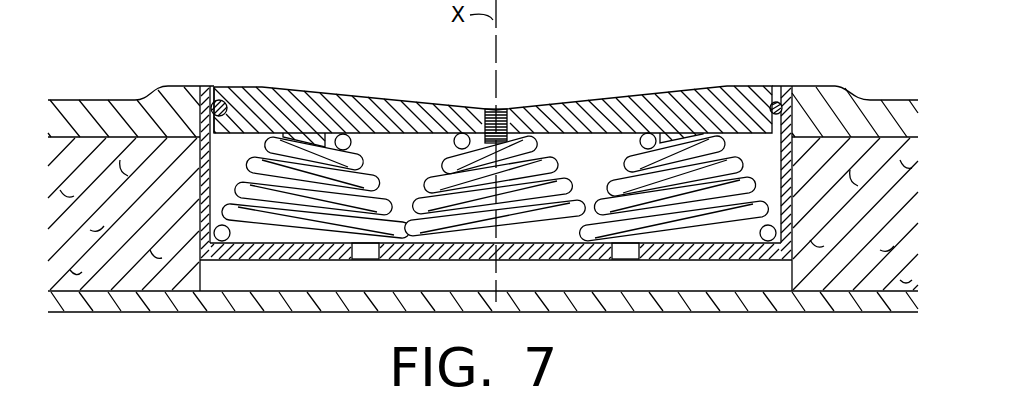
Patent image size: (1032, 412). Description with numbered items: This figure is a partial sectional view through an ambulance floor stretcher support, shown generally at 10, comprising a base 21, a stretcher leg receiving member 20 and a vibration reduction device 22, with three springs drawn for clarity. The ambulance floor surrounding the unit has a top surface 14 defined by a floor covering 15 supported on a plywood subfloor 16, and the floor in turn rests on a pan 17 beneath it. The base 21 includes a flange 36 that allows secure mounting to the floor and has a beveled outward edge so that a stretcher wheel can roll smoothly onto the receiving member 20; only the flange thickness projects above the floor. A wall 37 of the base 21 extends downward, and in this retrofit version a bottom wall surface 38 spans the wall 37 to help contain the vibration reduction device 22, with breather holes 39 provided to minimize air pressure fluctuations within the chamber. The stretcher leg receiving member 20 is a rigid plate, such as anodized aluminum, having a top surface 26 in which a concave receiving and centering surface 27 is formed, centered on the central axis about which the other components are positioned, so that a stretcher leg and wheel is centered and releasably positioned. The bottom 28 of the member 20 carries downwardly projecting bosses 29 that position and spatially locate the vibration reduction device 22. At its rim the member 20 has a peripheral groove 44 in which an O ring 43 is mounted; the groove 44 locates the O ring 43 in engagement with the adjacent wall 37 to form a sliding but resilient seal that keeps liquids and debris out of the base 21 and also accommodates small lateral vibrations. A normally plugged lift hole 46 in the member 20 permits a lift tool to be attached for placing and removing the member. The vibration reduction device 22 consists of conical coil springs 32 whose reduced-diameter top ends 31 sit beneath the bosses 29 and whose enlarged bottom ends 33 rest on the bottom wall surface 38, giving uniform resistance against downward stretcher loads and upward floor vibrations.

The spring assembly 10 is at (750, 55).
The top surface 14 is at (878, 100).
The floor covering 15 is at (112, 105).
The subfloor 16 is at (102, 236).
The pan 17 is at (628, 306).
The stretcher leg receiving member 20 is at (493, 97).
The base 21 is at (513, 201).
The vibration reduction device 22 is at (393, 197).
The top surface 26 is at (258, 87).
The concave stretcher leg or wheel receiving and centering surface 27 is at (412, 106).
The bottom 28 is at (218, 140).
The bosses 29 is at (322, 140).
The top ends 31 is at (344, 133).
The conical coil springs 32 is at (528, 135).
The bottom ends 33 is at (496, 266).
The flange 36 is at (173, 87).
The wall 37 is at (793, 183).
The bottom wall surface 38 is at (443, 274).
The breather holes 39 is at (359, 260).
The O ring 43 is at (214, 92).
The peripheral groove 44 is at (226, 104).
The lift hole 46 is at (503, 115).